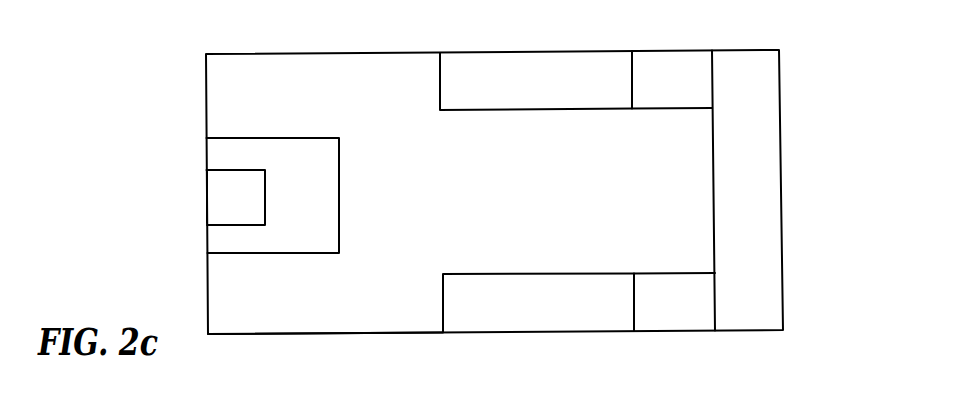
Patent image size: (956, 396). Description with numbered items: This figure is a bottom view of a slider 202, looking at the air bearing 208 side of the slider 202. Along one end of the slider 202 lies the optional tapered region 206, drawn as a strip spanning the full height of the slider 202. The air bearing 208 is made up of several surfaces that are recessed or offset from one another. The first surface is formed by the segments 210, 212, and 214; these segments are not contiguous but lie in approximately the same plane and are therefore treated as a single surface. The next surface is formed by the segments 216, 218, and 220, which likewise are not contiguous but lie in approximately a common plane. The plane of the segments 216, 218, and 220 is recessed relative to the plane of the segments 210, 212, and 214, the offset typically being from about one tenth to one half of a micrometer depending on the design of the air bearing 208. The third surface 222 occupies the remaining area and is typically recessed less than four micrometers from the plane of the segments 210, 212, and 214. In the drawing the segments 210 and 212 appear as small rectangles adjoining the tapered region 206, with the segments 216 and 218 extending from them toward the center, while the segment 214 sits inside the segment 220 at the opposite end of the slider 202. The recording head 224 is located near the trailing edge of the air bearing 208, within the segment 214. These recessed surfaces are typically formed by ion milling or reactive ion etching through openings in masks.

The slider 202 is at (508, 195).
The tapered region 206 is at (748, 329).
The air bearing 208 is at (281, 80).
The segment of first surface 210 is at (665, 274).
The segment of first surface 212 is at (666, 104).
The segment of first surface 214 is at (220, 214).
The segment of second surface 216 is at (528, 275).
The segment of second surface 218 is at (494, 104).
The segment of second surface 220 is at (334, 212).
The third surface 222 is at (357, 331).
The recording head 224 is at (216, 200).